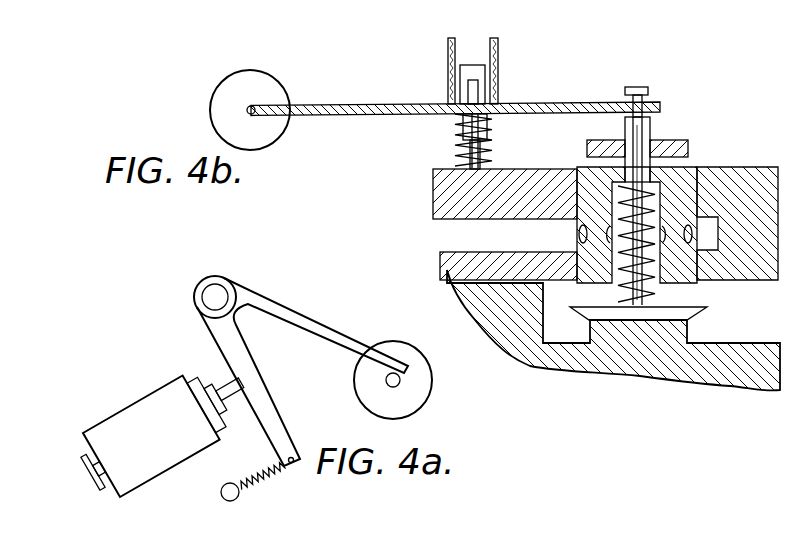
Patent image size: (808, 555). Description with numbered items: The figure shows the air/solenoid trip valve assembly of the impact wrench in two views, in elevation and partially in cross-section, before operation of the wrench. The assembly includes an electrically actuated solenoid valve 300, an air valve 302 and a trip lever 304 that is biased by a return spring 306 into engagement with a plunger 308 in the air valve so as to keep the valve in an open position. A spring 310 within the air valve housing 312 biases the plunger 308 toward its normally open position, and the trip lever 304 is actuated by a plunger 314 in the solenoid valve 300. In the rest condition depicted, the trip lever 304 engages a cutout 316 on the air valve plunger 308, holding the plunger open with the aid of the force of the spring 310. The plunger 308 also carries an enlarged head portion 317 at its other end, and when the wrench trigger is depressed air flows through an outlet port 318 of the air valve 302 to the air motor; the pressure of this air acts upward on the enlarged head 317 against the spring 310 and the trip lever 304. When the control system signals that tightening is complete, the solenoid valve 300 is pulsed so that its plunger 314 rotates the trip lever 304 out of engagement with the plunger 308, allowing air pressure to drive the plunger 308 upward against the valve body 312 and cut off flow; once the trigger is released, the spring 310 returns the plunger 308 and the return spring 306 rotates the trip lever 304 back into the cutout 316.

In FIG. 4B, the solenoid valve 300 is at (232, 92).
In FIG. 4A, the solenoid valve 300 is at (148, 412).
In FIG. 4B, the air valve 302 is at (746, 166).
In FIG. 4A, the air valve 302 is at (426, 376).
In FIG. 4B, the trip lever 304 is at (340, 104).
In FIG. 4A, the trip lever 304 is at (312, 318).
In FIG. 4A, the return spring 306 is at (262, 485).
In FIG. 4B, the plunger 308 is at (638, 133).
In FIG. 4A, the plunger 308 is at (398, 388).
In FIG. 4B, the spring 310 is at (683, 199).
In FIG. 4B, the air valve housing 312 is at (590, 170).
In FIG. 4A, the plunger 314 is at (220, 380).
In FIG. 4B, the cutout 316 is at (648, 95).
In FIG. 4B, the enlarged head portion 317 is at (697, 308).
In FIG. 4B, the outlet port 318 is at (578, 234).